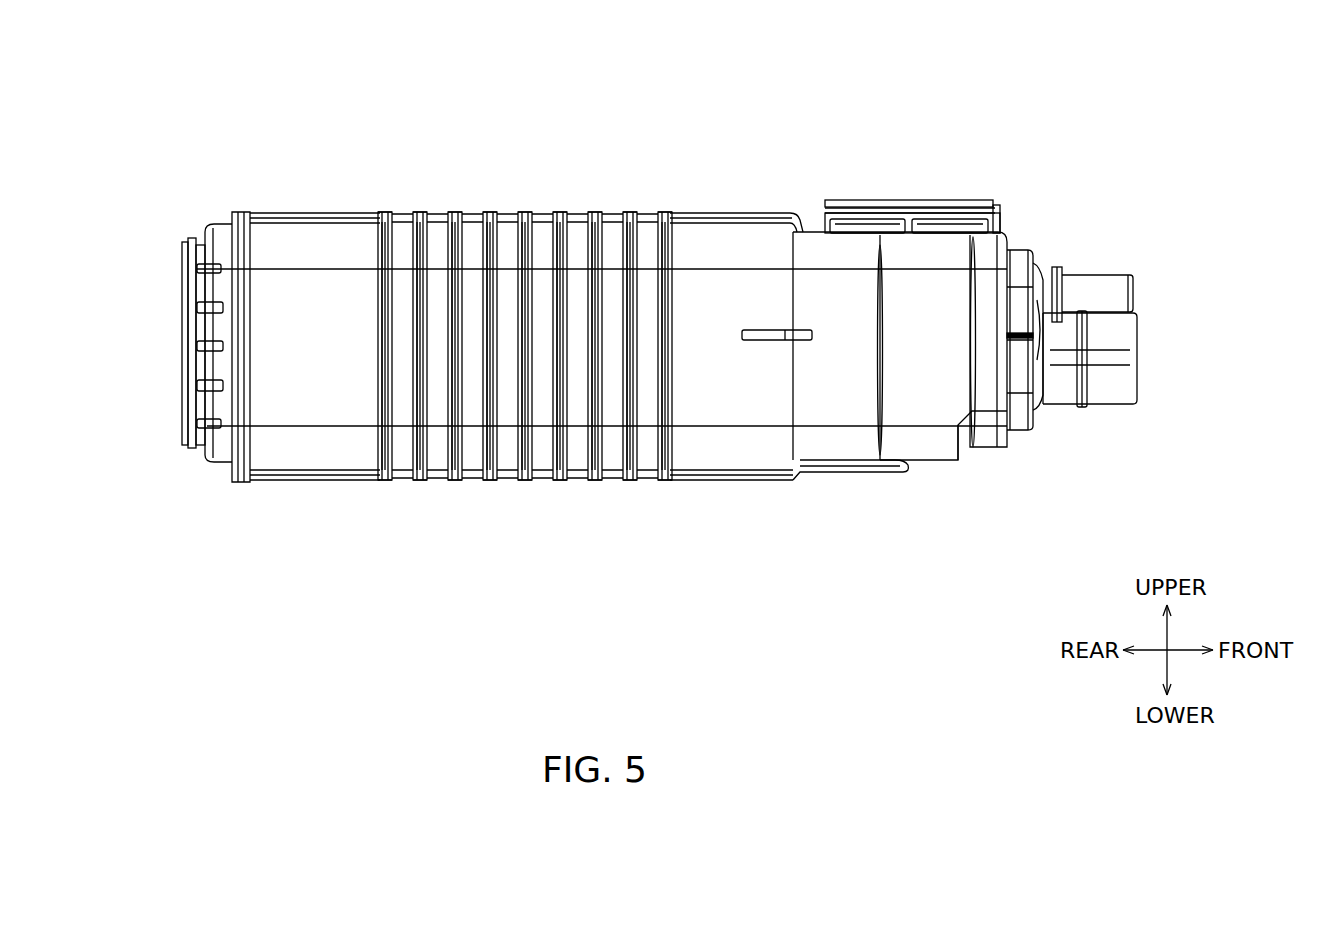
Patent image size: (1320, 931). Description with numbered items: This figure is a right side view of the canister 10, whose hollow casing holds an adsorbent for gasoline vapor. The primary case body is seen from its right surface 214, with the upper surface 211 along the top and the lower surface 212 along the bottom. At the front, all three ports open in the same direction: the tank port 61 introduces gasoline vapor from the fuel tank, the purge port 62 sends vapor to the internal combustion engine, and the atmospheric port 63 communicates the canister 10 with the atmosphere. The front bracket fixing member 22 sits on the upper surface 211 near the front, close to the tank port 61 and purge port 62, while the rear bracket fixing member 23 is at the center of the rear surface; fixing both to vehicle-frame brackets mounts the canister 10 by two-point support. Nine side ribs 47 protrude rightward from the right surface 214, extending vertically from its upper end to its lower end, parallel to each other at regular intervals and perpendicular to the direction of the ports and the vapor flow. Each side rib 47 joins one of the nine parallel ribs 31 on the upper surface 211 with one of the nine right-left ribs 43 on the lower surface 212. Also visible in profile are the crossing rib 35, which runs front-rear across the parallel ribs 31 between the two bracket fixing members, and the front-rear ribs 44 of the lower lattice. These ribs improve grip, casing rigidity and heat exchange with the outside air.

The canister 10 is at (852, 104).
The front bracket fixing member 22 is at (940, 200).
The rear bracket fixing member 23 is at (182, 340).
The parallel ribs 31 is at (668, 215).
The crossing rib 35 is at (748, 218).
The right-left ribs 43 is at (385, 482).
The front-rear ribs 44 is at (732, 478).
The side ribs 47 is at (483, 363).
The tank port 61 is at (1137, 378).
The purge port 62 is at (1136, 292).
The atmospheric port 63 is at (1137, 333).
The upper surface 211 is at (307, 215).
The lower surface 212 is at (311, 480).
The right surface 214 is at (820, 400).